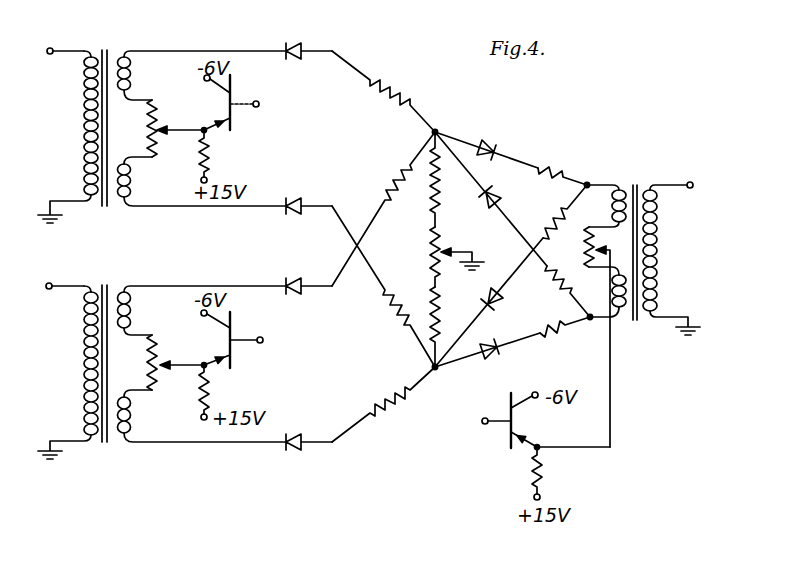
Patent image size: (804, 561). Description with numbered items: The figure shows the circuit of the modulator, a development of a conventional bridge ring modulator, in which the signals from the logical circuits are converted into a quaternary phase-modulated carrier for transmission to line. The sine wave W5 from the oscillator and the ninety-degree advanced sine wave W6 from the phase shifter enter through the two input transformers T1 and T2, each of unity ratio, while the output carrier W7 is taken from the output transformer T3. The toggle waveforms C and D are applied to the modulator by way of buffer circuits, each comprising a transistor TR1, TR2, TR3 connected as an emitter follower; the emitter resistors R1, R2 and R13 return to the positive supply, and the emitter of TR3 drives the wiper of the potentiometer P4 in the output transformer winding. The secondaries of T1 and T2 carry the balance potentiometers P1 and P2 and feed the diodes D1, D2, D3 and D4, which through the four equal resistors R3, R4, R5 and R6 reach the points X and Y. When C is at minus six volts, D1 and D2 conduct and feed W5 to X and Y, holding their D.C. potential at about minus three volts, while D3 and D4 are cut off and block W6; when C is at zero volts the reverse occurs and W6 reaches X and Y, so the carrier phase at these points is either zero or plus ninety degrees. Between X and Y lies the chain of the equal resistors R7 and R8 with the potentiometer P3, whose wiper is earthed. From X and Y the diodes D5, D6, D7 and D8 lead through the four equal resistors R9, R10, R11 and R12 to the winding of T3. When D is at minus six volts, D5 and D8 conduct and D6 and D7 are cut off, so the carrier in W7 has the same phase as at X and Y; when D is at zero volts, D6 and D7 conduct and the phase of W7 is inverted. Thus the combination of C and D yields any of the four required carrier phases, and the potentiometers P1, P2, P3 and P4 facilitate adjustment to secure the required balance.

The input transformer T1 is at (161, 124).
The input transformer T2 is at (161, 359).
The output transformer T3 is at (643, 248).
The sine wave output signal W5 is at (62, 39).
The sine wave W6 is at (62, 274).
The carrier waveform W7 is at (687, 198).
The potentiometer P1 is at (160, 128).
The potentiometer P2 is at (158, 362).
The potentiometer P3 is at (440, 257).
The potentiometer P4 is at (603, 337).
The resistor R1 is at (219, 156).
The resistor R2 is at (218, 392).
The resistor R3 is at (383, 91).
The resistor R4 is at (383, 209).
The resistor R5 is at (383, 286).
The resistor R6 is at (383, 404).
The resistor R7 is at (448, 179).
The resistor R8 is at (448, 327).
The resistor R9 is at (562, 169).
The resistor R10 is at (551, 212).
The resistor R11 is at (576, 291).
The resistor R12 is at (565, 339).
The resistor R13 is at (558, 473).
The diode D1 is at (310, 43).
The diode D2 is at (310, 198).
The diode D3 is at (311, 294).
The diode D4 is at (309, 456).
The diode D5 is at (486, 150).
The diode D6 is at (491, 199).
The diode D7 is at (489, 302).
The diode D8 is at (487, 355).
The transistor TR1 is at (242, 101).
The transistor TR2 is at (238, 339).
The transistor TR3 is at (560, 420).
The toggle waveform C is at (283, 350).
The toggle waveform D is at (486, 421).
The point X is at (443, 122).
The point Y is at (442, 374).